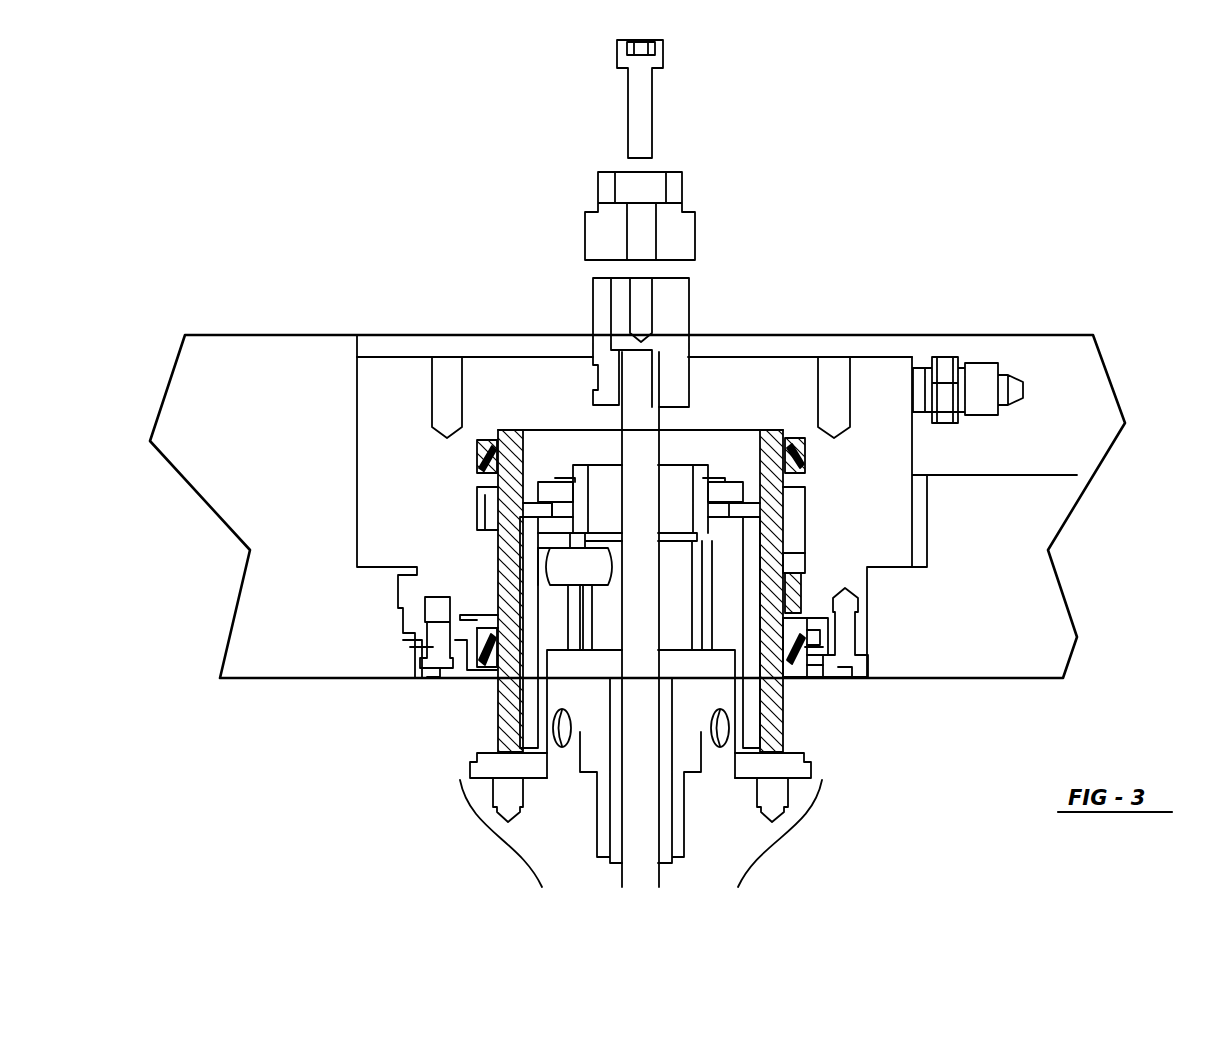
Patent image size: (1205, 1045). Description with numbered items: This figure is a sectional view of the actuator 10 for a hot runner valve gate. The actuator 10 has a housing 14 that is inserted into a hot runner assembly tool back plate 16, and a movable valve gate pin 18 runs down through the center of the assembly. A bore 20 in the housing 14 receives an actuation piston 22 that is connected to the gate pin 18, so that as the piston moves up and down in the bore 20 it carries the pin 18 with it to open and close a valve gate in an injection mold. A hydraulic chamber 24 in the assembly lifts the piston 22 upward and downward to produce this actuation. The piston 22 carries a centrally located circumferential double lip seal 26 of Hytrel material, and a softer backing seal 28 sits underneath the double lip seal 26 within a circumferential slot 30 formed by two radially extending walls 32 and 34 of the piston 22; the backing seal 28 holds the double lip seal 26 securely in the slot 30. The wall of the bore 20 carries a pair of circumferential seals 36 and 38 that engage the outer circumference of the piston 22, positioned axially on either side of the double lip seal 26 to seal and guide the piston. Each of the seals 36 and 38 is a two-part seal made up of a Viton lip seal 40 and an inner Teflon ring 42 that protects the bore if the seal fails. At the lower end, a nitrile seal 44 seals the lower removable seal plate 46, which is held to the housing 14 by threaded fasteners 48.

The actuator 10 is at (378, 242).
The housing 14 is at (405, 498).
The hot runner assembly tool back plate 16 is at (270, 490).
The movable valve gate pin 18 is at (648, 808).
The bore 20 is at (502, 387).
The actuation piston 22 is at (773, 700).
The hydraulic chamber 24 is at (748, 418).
The double lip seal 26 is at (795, 590).
The backing seal 28 is at (795, 580).
The circumferential slot 30 is at (790, 567).
The radially extending wall 32 is at (790, 563).
The radially extending wall 34 is at (845, 633).
The circumferential bore seal 36 is at (477, 455).
The circumferential bore seal 38 is at (495, 650).
The lip seal 40 is at (485, 452).
The inner Teflon ring 42 is at (493, 463).
The seal 44 is at (868, 663).
The lower removable seal plate 46 is at (813, 667).
The threaded fasteners 48 is at (433, 648).